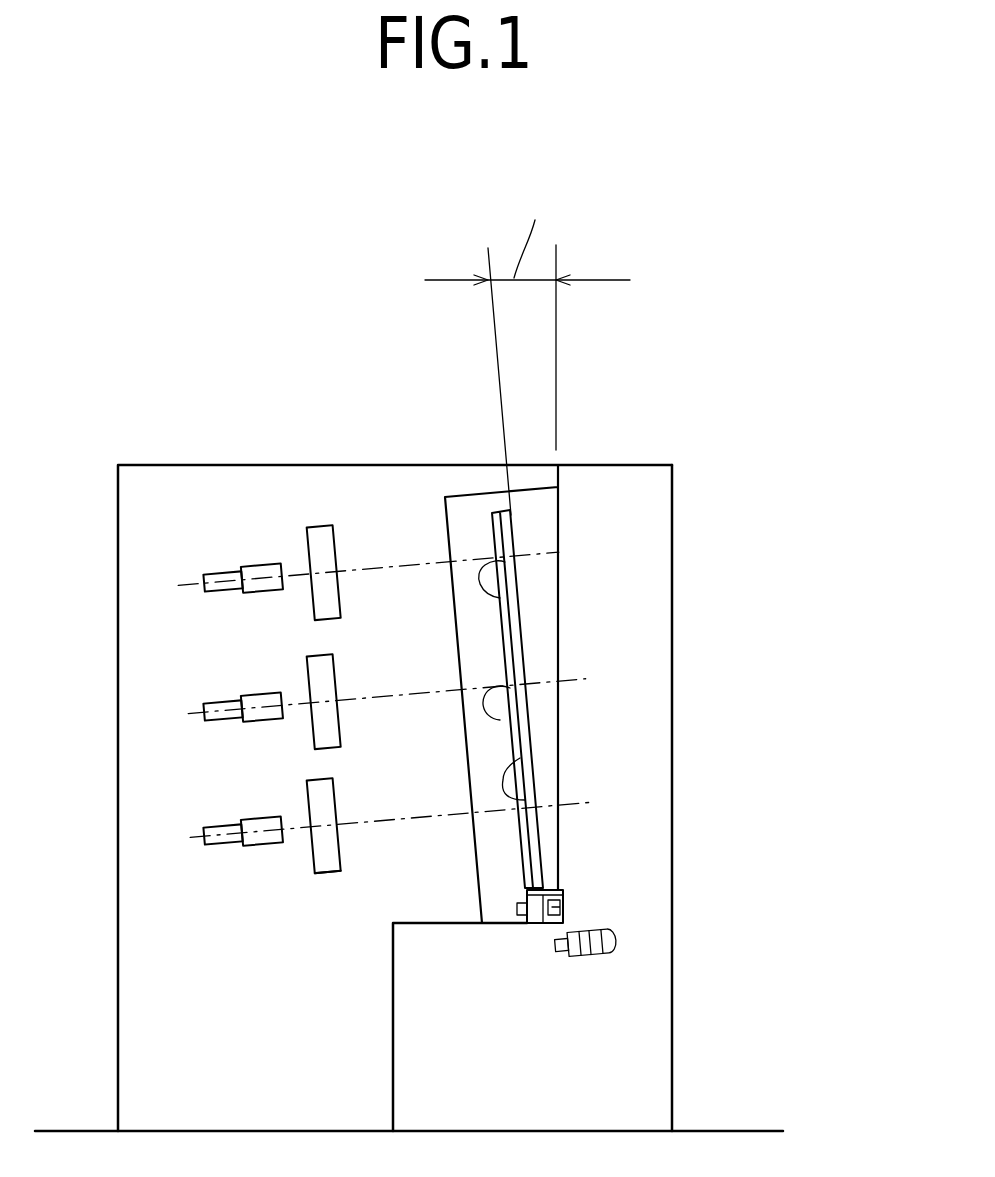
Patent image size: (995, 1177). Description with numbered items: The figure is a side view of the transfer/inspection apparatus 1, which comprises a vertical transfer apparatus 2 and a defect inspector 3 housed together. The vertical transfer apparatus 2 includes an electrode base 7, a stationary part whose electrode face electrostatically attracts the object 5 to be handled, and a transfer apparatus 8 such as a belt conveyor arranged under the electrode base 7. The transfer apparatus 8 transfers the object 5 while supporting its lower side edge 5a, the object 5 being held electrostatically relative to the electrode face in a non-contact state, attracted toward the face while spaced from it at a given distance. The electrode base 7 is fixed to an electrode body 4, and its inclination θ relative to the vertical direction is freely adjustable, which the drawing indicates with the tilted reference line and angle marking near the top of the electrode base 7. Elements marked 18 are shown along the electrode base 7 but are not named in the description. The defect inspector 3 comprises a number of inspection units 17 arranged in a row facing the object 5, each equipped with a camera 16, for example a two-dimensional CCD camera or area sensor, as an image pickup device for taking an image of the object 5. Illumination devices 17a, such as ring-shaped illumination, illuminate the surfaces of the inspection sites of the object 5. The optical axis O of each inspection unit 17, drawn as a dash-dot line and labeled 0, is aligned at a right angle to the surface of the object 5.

The transfer/inspection apparatus 1 is at (718, 263).
The vertical transfer apparatus 2 is at (676, 828).
The defect inspector 3 is at (230, 465).
The electrode body 4 is at (672, 540).
The object 5 is at (492, 555).
The lower side edge 5a is at (523, 923).
The electrode base 7 is at (505, 527).
The transfer apparatus 8 is at (581, 877).
The camera 16 is at (213, 570).
The inspection unit 17 is at (255, 618).
The illumination device 17a is at (328, 875).
The guide roller 18 is at (500, 598).
The optical axis 0 is at (398, 568).